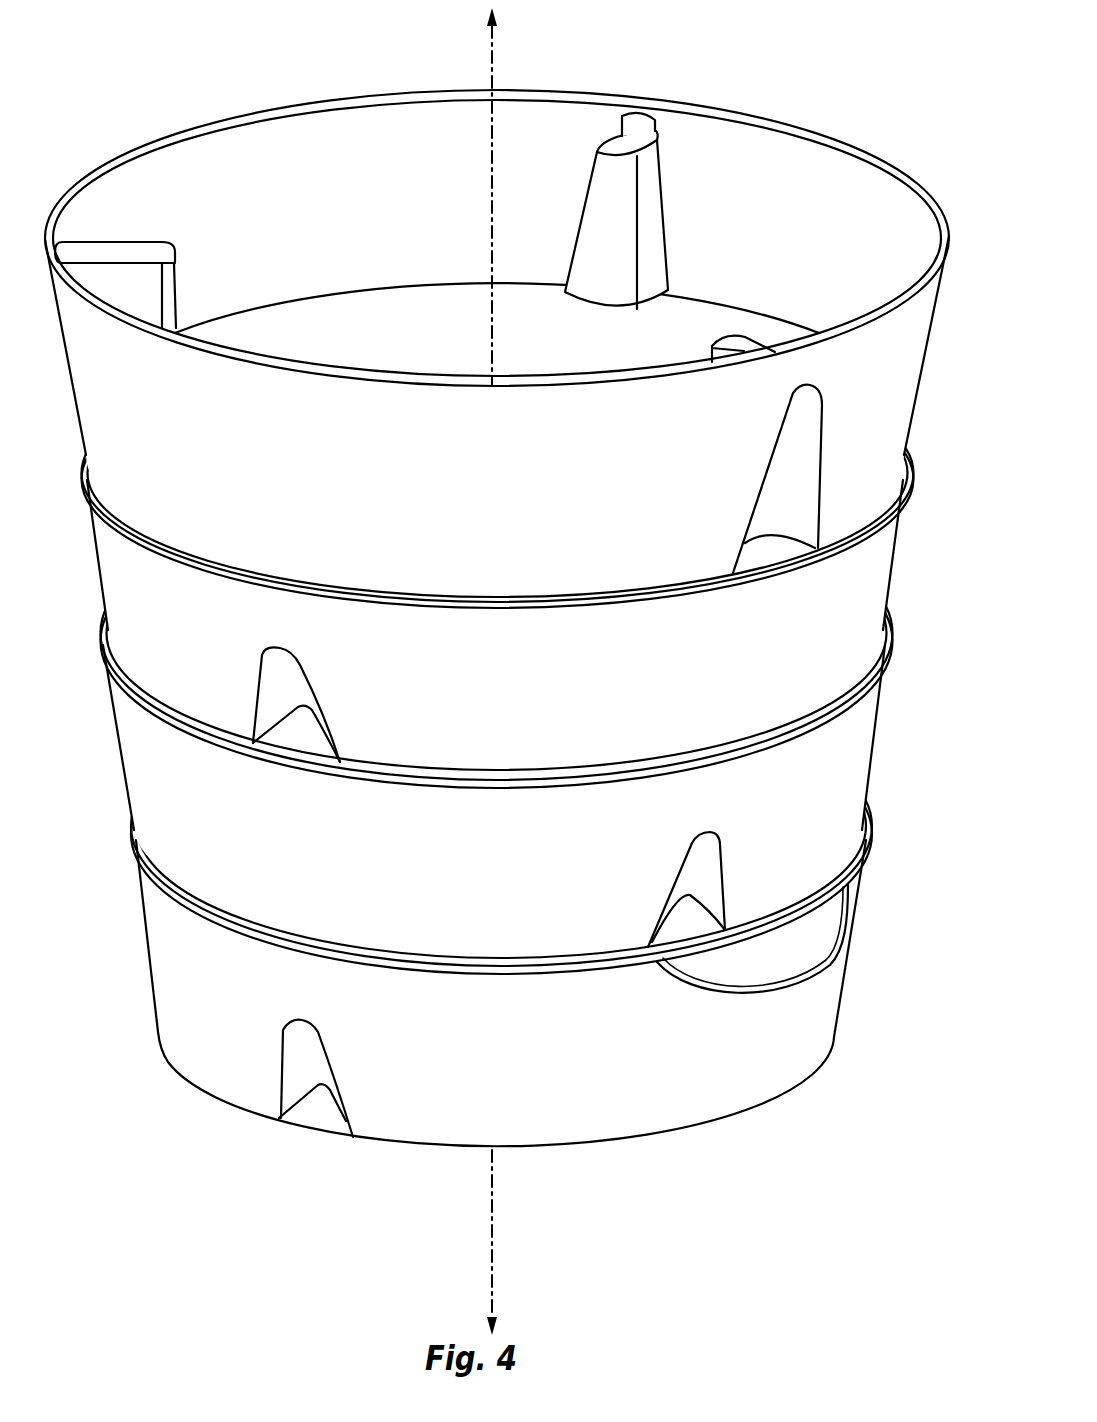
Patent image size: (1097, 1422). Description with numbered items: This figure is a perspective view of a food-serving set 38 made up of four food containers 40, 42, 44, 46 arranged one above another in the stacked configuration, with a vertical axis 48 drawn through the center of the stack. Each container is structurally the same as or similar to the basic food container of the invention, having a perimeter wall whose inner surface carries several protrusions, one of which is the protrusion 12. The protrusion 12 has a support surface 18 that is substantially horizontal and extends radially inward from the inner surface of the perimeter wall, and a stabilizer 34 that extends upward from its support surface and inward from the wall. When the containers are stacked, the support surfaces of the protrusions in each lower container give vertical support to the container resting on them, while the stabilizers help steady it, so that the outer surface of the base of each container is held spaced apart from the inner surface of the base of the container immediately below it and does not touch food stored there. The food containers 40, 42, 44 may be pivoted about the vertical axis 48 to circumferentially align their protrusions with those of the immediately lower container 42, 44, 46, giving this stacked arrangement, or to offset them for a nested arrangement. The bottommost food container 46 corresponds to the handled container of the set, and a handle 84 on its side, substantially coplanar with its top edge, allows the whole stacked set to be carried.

The food-serving set 38 is at (828, 46).
The food container 40 is at (350, 176).
The food container 42 is at (287, 618).
The food container 44 is at (531, 851).
The food container 46 is at (536, 991).
The vertical axis 48 is at (493, 68).
The protrusion 12 is at (685, 890).
The support surface 18 is at (616, 784).
The stabilizer 34 is at (878, 836).
The handle 84 is at (800, 960).